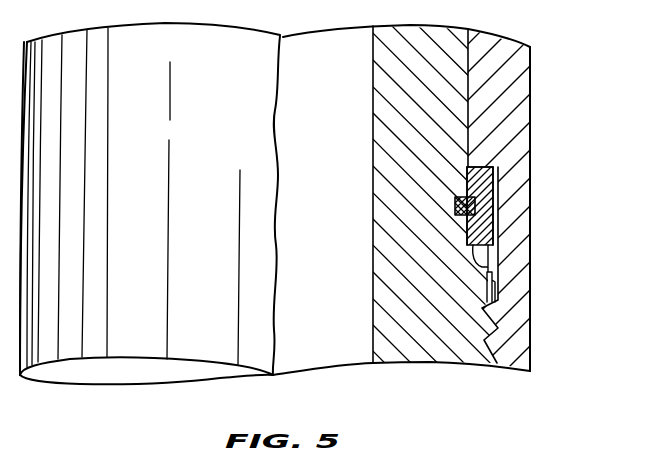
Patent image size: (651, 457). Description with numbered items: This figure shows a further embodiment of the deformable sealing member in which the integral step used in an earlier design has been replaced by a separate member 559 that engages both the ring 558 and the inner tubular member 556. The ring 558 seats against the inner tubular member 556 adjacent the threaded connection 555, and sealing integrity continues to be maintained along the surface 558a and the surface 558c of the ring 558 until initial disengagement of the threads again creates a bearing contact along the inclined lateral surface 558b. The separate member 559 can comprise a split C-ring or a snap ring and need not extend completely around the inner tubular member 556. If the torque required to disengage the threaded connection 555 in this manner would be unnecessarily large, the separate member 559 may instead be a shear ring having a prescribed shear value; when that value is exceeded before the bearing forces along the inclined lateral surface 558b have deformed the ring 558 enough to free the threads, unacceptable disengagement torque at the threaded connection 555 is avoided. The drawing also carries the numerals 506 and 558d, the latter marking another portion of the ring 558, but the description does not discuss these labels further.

The cylindrical body 506 is at (517, 107).
The threaded connection 555 is at (490, 345).
The inner tubular member 556 is at (468, 308).
The ring 558 is at (500, 200).
The surface 558a is at (502, 167).
The inclined lateral surface 558b is at (492, 184).
The surface 558c is at (493, 270).
The insert inner face 558d is at (467, 182).
The separate member 559 is at (455, 206).